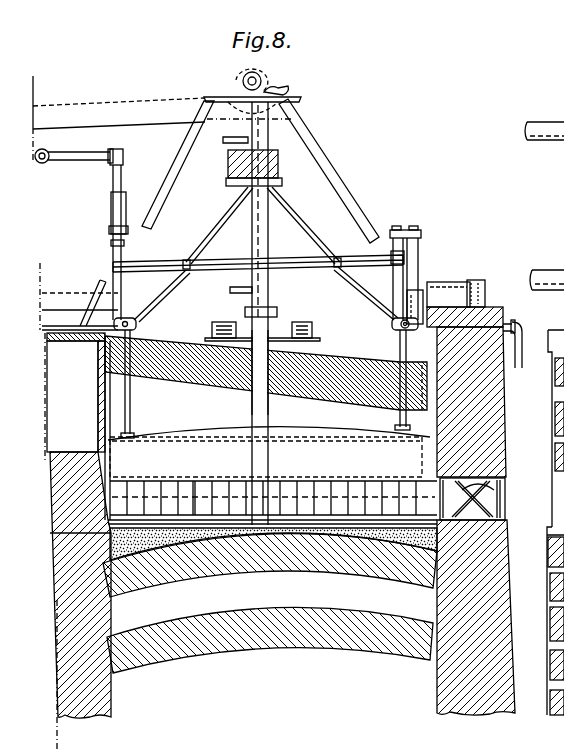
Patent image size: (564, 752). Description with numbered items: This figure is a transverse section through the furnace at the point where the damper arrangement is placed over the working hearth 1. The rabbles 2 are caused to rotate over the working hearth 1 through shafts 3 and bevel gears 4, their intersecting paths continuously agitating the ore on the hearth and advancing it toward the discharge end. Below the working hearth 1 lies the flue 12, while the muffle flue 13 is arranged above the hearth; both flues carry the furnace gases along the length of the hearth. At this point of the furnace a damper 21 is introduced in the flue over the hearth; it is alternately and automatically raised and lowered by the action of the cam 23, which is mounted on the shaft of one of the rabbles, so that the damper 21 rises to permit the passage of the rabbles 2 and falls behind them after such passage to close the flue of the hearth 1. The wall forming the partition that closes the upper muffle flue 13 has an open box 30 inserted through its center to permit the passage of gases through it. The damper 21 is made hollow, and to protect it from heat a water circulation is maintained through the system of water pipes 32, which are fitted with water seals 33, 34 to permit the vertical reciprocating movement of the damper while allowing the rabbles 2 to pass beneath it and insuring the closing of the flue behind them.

The working hearth 1 is at (383, 515).
The rabbles 2 is at (195, 512).
The shafts 3 is at (240, 85).
The bevel gears 4 is at (274, 91).
The flue 12 is at (270, 603).
The flue 13 is at (267, 428).
The damper 21 is at (272, 480).
The cam 23 is at (228, 162).
The open box 30 is at (75, 396).
The water pipes 32 is at (289, 288).
The water seal 33 is at (118, 226).
The water seal 34 is at (456, 284).